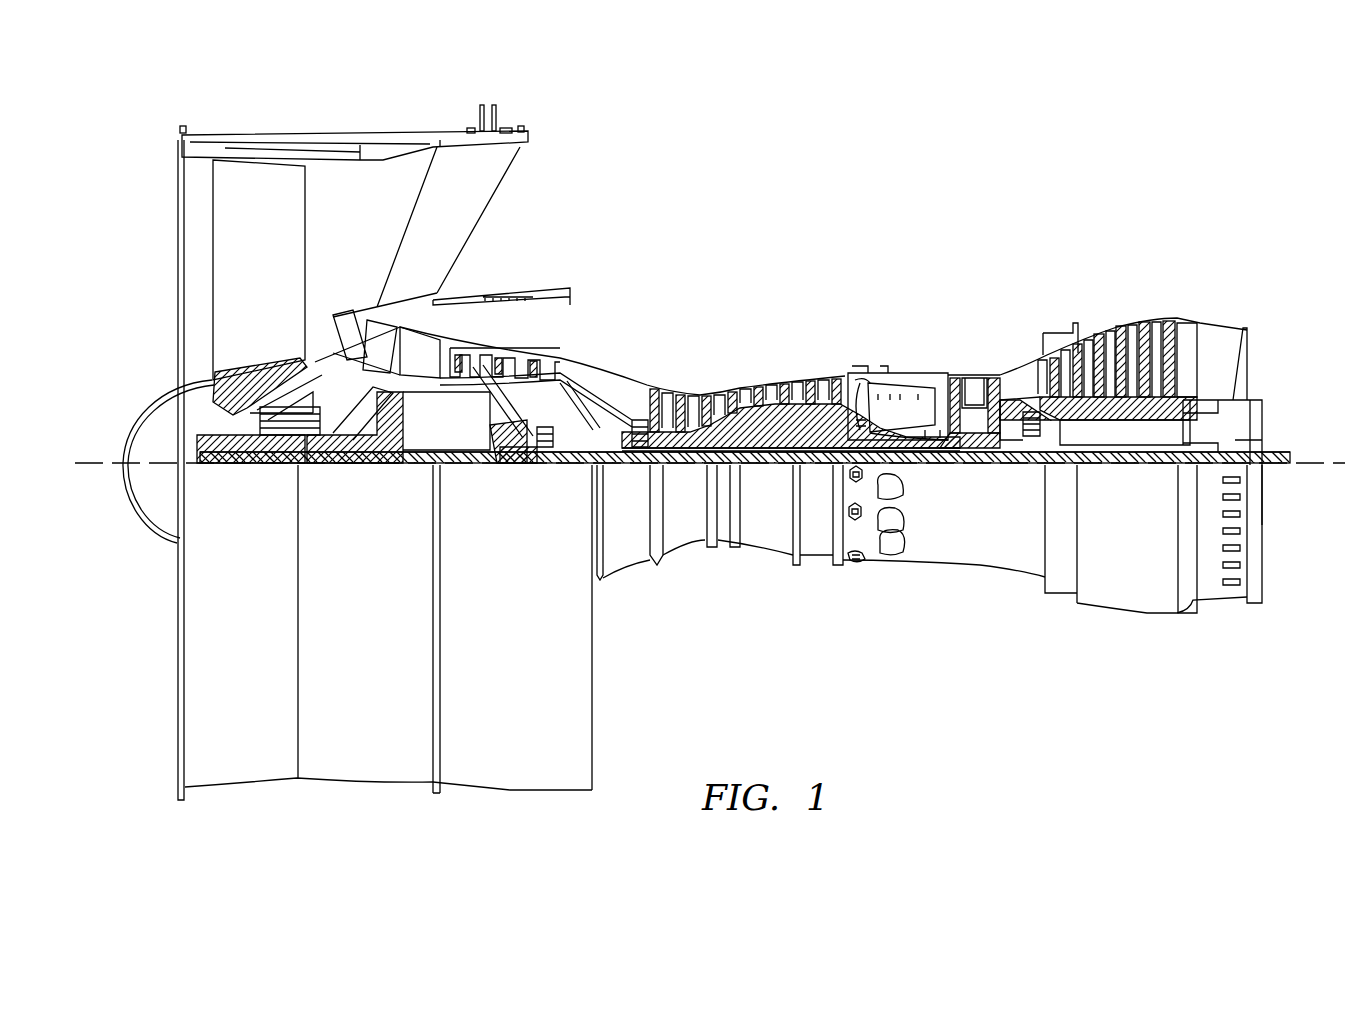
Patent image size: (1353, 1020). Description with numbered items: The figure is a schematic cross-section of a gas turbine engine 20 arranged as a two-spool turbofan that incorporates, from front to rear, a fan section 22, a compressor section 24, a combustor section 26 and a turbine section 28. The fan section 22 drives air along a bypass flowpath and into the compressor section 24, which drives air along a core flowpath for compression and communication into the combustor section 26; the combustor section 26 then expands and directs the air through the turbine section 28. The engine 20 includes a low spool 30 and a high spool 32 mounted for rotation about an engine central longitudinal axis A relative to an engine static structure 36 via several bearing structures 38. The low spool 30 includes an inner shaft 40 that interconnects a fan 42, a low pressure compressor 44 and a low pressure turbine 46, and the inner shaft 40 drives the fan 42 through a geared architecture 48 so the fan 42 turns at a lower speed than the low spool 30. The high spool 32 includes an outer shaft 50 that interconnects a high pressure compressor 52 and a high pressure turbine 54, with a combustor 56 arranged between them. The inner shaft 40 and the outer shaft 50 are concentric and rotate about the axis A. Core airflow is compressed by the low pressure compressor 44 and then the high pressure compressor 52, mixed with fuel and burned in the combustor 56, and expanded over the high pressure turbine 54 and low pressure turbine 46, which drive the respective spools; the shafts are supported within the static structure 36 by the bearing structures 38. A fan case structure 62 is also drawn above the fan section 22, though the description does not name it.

The gas turbine engine 20 is at (937, 172).
The fan section 22 is at (435, 114).
The compressor section 24 is at (440, 270).
The combustor section 26 is at (955, 270).
The turbine section 28 is at (1185, 270).
The low spool 30 is at (770, 472).
The high spool 32 is at (805, 420).
The engine static structure 36 is at (818, 568).
The bearing structures 38 is at (268, 447).
The inner shaft 40 is at (620, 482).
The fan 42 is at (278, 308).
The low pressure compressor 44 is at (513, 355).
The low pressure turbine 46 is at (1115, 340).
The geared architecture 48 is at (390, 447).
The outer shaft 50 is at (905, 467).
The high pressure compressor 52 is at (752, 430).
The high pressure turbine 54 is at (970, 382).
The combustor 56 is at (900, 398).
The fan case 62 is at (435, 143).
The engine central longitudinal axis A is at (1295, 445).